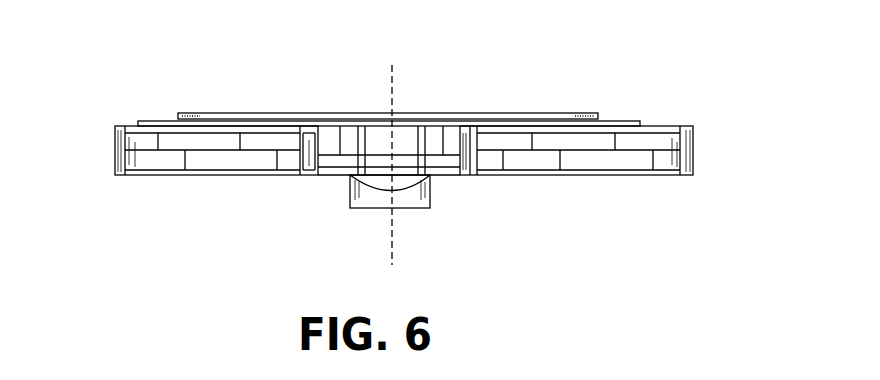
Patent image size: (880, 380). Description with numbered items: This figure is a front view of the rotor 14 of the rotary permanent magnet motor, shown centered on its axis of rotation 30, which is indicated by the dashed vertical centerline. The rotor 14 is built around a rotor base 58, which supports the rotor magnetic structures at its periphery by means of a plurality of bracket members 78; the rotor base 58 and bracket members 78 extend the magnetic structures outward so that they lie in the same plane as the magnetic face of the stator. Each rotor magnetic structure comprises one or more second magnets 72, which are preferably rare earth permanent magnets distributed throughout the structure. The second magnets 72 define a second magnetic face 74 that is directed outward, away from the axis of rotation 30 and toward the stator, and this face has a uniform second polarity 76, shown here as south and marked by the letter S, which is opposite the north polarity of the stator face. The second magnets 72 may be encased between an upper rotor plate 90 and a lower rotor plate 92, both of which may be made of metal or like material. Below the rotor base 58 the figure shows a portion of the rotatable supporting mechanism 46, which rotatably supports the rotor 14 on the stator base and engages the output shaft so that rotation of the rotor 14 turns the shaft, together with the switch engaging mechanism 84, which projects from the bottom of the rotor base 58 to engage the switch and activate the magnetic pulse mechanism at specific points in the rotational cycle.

The rotor 14 is at (417, 144).
The axis of rotation 30 is at (398, 72).
The rotatable supporting mechanism 46 is at (338, 207).
The rotor base 58 is at (230, 113).
The second magnets 72 is at (145, 158).
The second magnetic face 74 is at (166, 178).
The second polarity 76 is at (217, 162).
The bracket members 78 is at (150, 121).
The switch engaging mechanism 84 is at (393, 180).
The upper rotor plate 90 is at (670, 130).
The lower rotor plate 92 is at (655, 178).